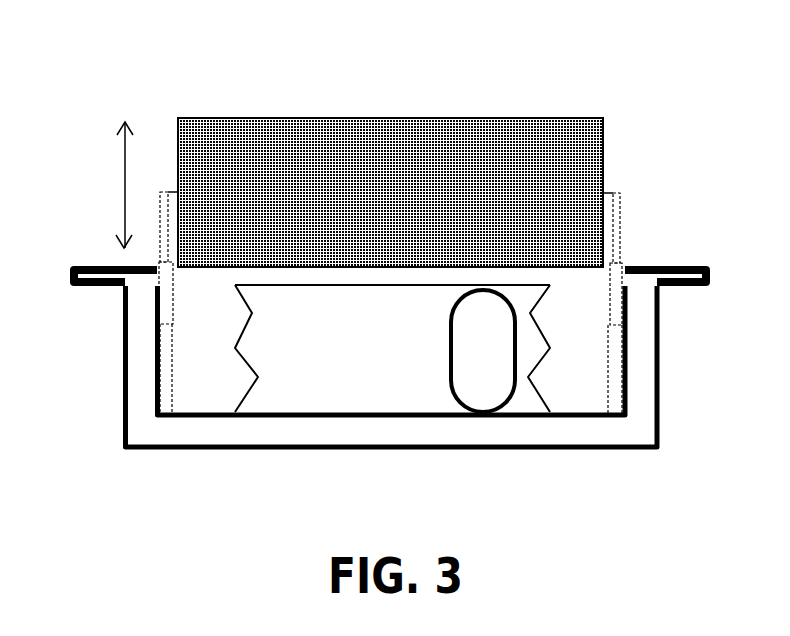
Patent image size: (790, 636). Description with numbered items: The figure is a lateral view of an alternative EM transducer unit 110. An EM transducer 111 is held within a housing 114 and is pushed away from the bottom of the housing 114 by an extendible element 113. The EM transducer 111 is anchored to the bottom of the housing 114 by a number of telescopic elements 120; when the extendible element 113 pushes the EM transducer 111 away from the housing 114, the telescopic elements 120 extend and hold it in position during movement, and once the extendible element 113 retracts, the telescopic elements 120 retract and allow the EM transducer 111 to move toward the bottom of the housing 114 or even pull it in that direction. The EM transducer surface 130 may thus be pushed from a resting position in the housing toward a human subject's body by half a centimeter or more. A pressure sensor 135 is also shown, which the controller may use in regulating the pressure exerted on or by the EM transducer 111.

The EM transducer unit 110 is at (668, 108).
The EM transducer 111 is at (485, 155).
The extendible element 113 is at (392, 348).
The housing 114 is at (662, 385).
The telescopic elements 120 is at (633, 235).
The EM transducer surface 130 is at (370, 118).
The pressure sensor 135 is at (514, 351).